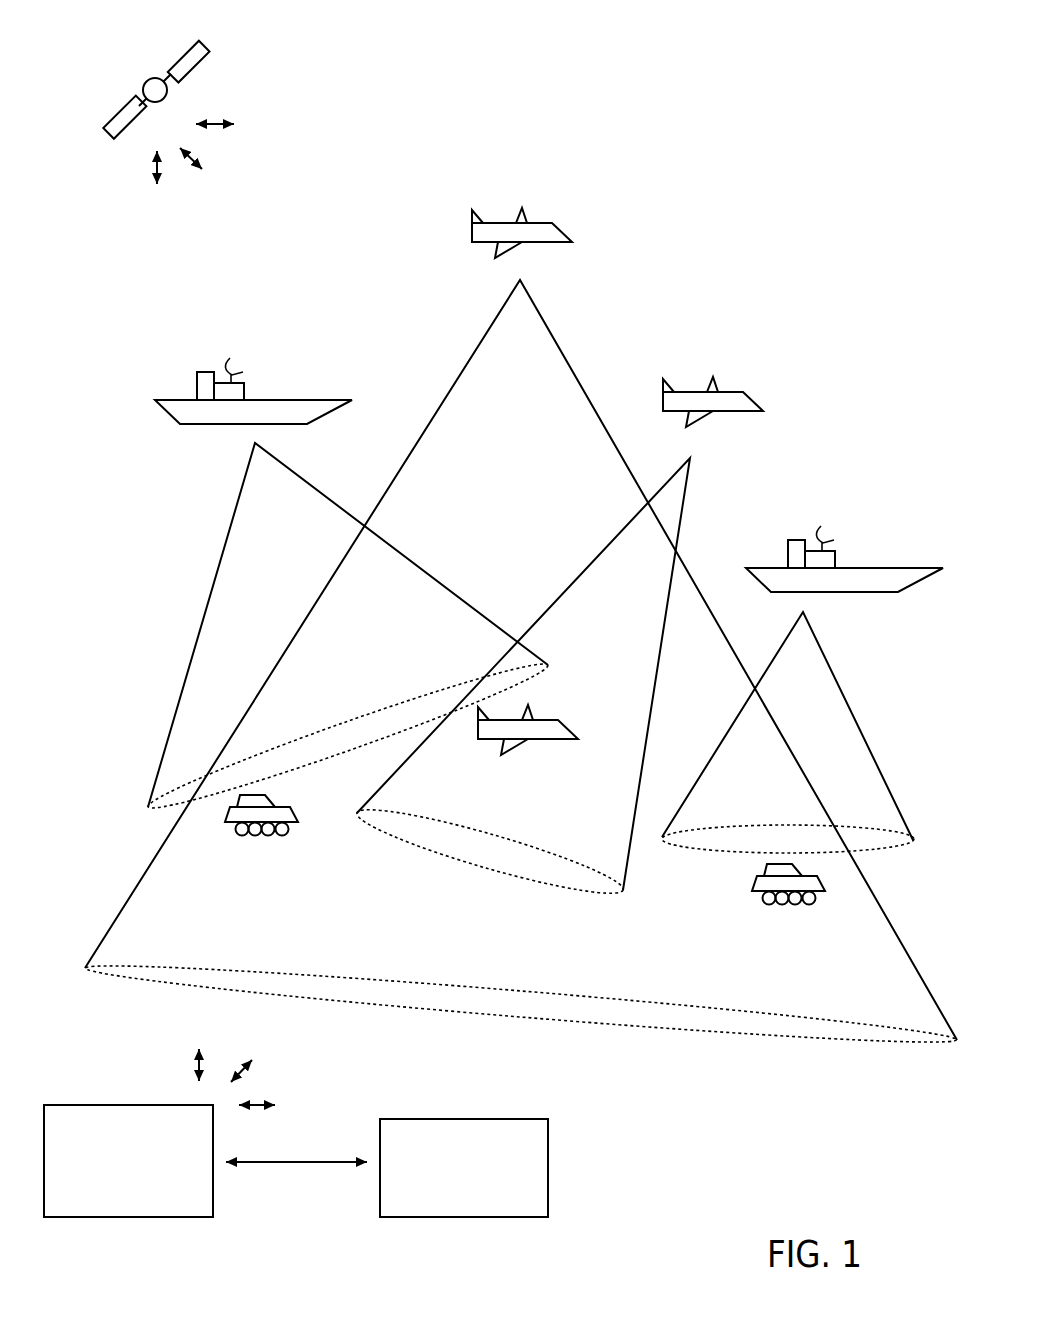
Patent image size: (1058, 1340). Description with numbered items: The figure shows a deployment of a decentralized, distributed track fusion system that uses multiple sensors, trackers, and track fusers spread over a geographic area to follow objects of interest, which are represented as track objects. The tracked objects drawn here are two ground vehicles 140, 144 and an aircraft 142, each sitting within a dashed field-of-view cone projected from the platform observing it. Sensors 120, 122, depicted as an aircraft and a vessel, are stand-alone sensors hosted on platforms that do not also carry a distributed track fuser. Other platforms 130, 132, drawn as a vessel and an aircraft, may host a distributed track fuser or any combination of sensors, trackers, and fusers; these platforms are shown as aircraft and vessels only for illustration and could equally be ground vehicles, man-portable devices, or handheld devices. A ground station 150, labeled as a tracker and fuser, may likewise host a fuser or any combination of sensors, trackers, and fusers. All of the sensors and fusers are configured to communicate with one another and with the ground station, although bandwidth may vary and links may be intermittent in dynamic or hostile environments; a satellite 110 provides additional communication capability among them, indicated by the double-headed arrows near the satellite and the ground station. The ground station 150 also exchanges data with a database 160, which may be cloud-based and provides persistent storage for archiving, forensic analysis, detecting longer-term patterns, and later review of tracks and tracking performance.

The satellite 110 is at (146, 48).
The sensor 120 is at (589, 198).
The sensor 122 is at (919, 530).
The platform 130 is at (300, 346).
The platform 132 is at (806, 378).
The vehicle 140 is at (266, 913).
The aircraft 142 is at (534, 826).
The vehicle 144 is at (799, 970).
The ground station 150 is at (146, 1205).
The database 160 is at (481, 1201).